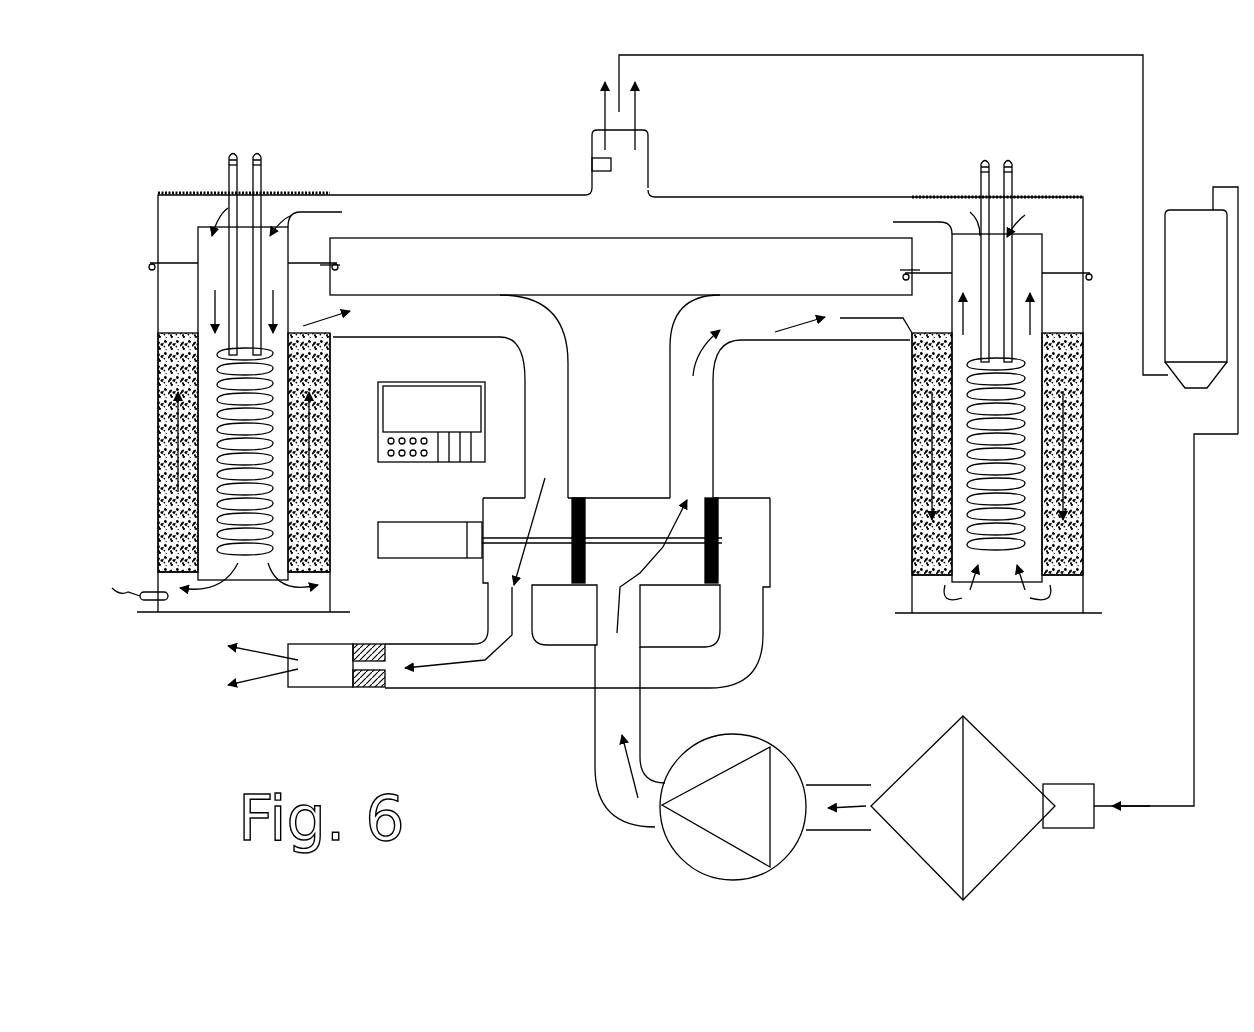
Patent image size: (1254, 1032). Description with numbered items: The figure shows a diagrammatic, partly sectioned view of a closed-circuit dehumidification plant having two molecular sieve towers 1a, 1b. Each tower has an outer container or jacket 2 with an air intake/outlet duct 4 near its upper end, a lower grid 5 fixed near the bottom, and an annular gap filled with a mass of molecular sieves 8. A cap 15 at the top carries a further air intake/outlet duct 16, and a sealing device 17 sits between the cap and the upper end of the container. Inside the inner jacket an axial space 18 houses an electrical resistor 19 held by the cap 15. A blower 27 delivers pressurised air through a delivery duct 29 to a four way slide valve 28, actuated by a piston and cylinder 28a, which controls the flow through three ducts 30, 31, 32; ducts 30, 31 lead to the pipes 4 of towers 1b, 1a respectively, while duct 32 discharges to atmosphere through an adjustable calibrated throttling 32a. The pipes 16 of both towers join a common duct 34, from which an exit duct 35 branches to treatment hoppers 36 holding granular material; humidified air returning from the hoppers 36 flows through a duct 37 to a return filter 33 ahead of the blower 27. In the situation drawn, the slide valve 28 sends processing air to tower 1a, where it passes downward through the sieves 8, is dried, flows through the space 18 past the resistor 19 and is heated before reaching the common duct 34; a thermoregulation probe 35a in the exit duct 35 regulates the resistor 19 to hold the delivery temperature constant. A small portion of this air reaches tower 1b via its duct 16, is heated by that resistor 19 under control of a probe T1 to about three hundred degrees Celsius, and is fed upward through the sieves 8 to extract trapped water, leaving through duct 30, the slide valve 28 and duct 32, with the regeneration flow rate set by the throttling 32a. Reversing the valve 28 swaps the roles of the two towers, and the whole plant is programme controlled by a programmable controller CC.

The tower 1a is at (900, 497).
The tower 1b is at (142, 498).
The outer container or jacket 2 is at (915, 438).
The air intake/outlet opening or duct 4 is at (345, 330).
The first or lower grid 5 is at (232, 582).
The molecular sieves or filters 8 is at (168, 358).
The cap 15 is at (177, 192).
The opening or duct for air intake/outlet 16 is at (339, 208).
The sealing device 17 is at (163, 262).
The axial light or space 18 is at (162, 392).
The electrical resistor 19 is at (210, 446).
The blower 27 is at (792, 770).
The four way slide valve 28 is at (608, 492).
The piston and cylinder 28a is at (425, 558).
The delivery duct 29 is at (592, 731).
The duct 30 is at (570, 380).
The duct 31 is at (708, 425).
The duct 32 is at (313, 692).
The calibrated throttling 32a is at (375, 692).
The return filter 33 is at (1000, 766).
The common duct 34 is at (693, 202).
The exit duct 35 is at (785, 60).
The thermoregulation probe 35a is at (592, 160).
The treatment hopper 36 is at (1184, 210).
The duct 37 is at (1192, 655).
The programmable controller CC is at (407, 462).
The probe T1 is at (148, 602).